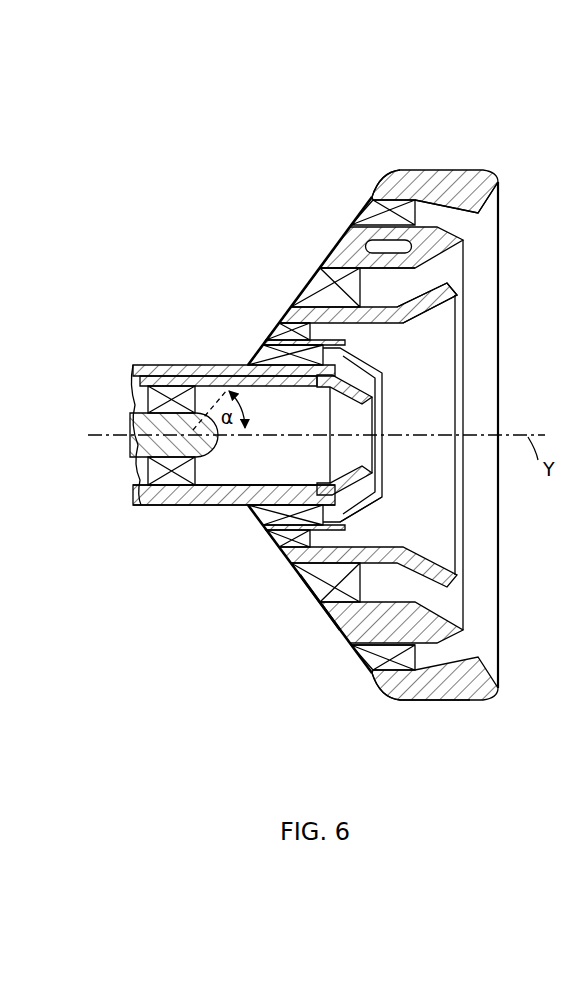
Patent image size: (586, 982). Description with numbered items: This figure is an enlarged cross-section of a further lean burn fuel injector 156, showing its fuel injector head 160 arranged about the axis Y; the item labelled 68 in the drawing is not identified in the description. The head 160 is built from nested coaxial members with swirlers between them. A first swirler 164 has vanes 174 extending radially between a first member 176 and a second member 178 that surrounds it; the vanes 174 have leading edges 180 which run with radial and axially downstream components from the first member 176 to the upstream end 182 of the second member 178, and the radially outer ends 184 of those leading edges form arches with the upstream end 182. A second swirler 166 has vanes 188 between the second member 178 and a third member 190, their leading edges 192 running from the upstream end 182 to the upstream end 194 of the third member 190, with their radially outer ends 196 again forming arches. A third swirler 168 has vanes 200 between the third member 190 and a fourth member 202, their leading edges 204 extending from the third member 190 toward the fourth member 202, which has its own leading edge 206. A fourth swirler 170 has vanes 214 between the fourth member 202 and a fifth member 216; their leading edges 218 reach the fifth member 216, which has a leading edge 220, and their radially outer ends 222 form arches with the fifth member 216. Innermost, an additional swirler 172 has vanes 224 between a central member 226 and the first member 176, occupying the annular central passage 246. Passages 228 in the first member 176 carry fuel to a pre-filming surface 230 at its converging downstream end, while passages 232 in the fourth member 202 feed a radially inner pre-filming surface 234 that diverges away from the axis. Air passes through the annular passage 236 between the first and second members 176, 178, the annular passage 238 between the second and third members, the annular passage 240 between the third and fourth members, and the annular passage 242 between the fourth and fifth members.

The pipe 68 is at (133, 506).
The fuel injector 156 is at (373, 133).
The fuel injector head 160 is at (263, 143).
The first swirler 164 is at (248, 530).
The second swirler 166 is at (267, 533).
The third swirler 168 is at (312, 582).
The fourth swirler 170 is at (357, 650).
The additional swirler 172 is at (132, 366).
The vanes 174 is at (272, 355).
The first member 176 is at (135, 493).
The second member 178 is at (367, 510).
The leading edges 180 is at (255, 345).
The leading edge 182 is at (247, 535).
The radially outer ends 184 is at (248, 352).
The vanes 188 is at (340, 340).
The third member 190 is at (410, 320).
The leading edges 192 is at (290, 305).
The leading edge 194 is at (265, 325).
The radially outer ends 196 is at (293, 340).
The vanes 200 is at (333, 283).
The fourth member 202 is at (372, 195).
The leading edges 204 is at (313, 267).
The leading edge 206 is at (322, 262).
The vanes 214 is at (397, 665).
The fifth member 216 is at (472, 700).
The leading edges 218 is at (352, 648).
The leading edge 220 is at (382, 682).
The radially outer ends 222 is at (387, 680).
The vanes 224 is at (177, 483).
The central member 226 is at (153, 438).
The passages 228 is at (200, 376).
The pre-filming surface 230 is at (333, 386).
The passages 232 is at (432, 200).
The pre-filming surface 234 is at (448, 252).
The annular passage 236 is at (340, 505).
The annular passage 238 is at (333, 540).
The annular passage 240 is at (393, 582).
The annular passage 242 is at (447, 213).
The central passage 246 is at (238, 460).